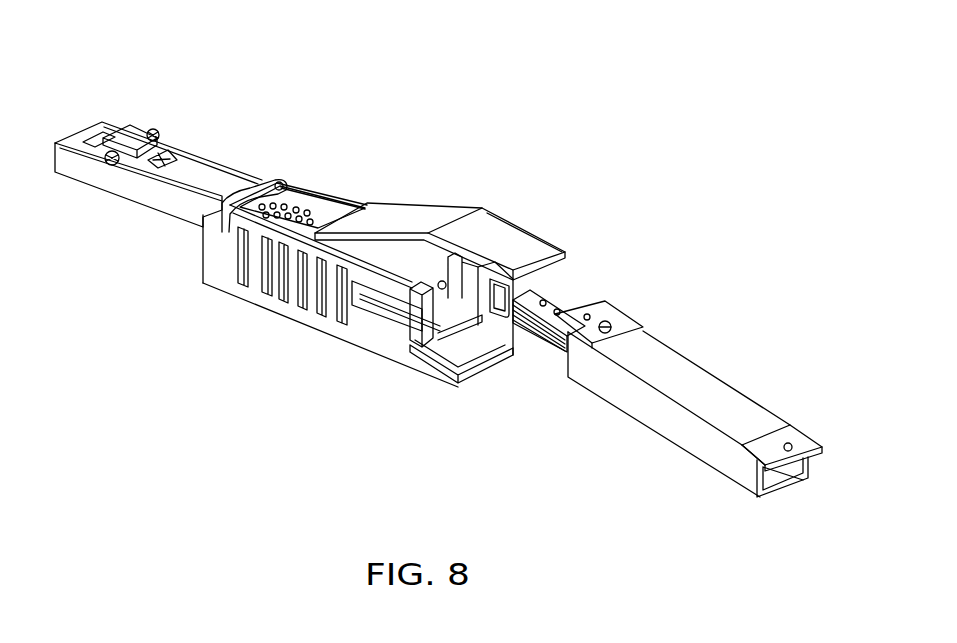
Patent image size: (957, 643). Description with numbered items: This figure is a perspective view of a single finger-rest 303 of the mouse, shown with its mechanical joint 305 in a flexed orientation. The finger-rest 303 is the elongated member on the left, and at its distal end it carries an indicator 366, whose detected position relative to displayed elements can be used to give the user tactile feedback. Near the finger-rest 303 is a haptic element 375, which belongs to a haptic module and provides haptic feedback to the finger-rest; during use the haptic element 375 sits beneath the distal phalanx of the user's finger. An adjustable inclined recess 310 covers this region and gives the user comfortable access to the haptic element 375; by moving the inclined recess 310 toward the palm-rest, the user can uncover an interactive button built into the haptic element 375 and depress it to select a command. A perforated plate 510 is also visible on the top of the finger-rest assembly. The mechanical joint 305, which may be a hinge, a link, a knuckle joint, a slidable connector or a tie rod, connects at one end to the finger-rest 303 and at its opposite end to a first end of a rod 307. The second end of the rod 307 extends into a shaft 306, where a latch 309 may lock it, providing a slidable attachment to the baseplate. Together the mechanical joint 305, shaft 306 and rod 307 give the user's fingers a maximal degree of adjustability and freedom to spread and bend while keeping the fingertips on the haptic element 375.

The indicator 366 is at (110, 126).
The haptic element 375 is at (268, 190).
The perforated plate 510 is at (318, 218).
The inclined recess 310 is at (428, 217).
The finger-rest 303 is at (287, 305).
The mechanical joint 305 is at (488, 295).
The rod 307 is at (547, 340).
The latch 309 is at (600, 322).
The shaft 306 is at (650, 348).